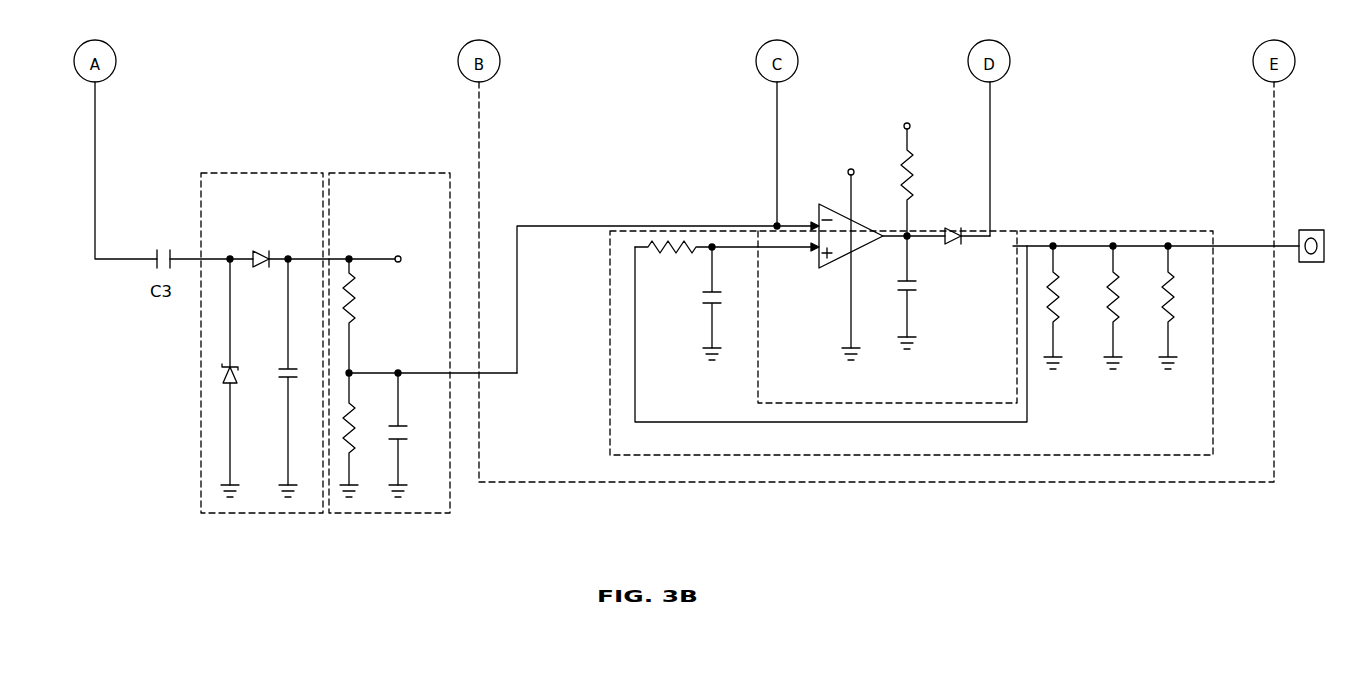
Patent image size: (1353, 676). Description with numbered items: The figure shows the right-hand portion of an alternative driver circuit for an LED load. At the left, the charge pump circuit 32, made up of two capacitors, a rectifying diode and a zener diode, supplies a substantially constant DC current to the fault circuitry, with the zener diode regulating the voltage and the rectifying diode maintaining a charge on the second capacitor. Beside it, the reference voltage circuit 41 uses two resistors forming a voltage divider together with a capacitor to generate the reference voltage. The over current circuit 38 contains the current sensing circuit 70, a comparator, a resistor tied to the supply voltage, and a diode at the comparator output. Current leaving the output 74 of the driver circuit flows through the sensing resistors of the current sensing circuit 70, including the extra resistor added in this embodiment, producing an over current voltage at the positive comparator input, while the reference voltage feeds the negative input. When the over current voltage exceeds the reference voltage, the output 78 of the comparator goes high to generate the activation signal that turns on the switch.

The charge pump circuit 32 is at (238, 514).
The reference voltage circuit 41 is at (411, 514).
The current sensing circuit 70 is at (924, 279).
The output of the comparator 78 is at (893, 240).
The over current circuit 38 is at (955, 265).
The output of the driver circuit 74 is at (1306, 262).